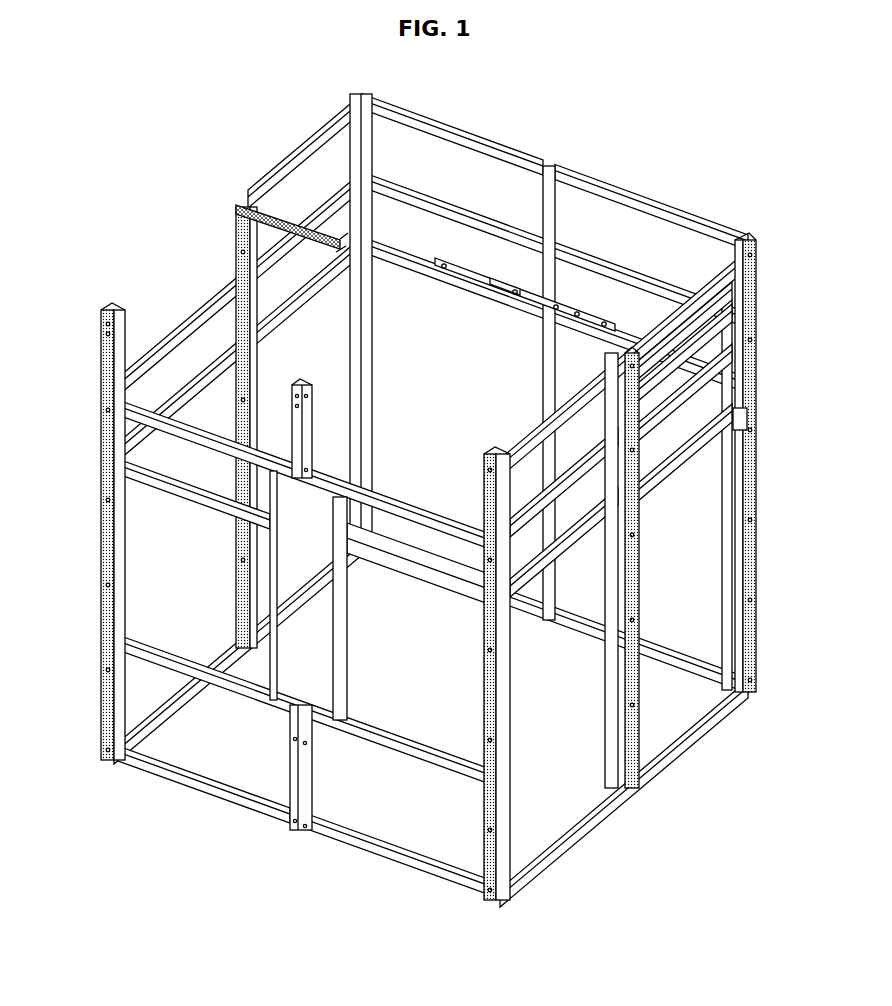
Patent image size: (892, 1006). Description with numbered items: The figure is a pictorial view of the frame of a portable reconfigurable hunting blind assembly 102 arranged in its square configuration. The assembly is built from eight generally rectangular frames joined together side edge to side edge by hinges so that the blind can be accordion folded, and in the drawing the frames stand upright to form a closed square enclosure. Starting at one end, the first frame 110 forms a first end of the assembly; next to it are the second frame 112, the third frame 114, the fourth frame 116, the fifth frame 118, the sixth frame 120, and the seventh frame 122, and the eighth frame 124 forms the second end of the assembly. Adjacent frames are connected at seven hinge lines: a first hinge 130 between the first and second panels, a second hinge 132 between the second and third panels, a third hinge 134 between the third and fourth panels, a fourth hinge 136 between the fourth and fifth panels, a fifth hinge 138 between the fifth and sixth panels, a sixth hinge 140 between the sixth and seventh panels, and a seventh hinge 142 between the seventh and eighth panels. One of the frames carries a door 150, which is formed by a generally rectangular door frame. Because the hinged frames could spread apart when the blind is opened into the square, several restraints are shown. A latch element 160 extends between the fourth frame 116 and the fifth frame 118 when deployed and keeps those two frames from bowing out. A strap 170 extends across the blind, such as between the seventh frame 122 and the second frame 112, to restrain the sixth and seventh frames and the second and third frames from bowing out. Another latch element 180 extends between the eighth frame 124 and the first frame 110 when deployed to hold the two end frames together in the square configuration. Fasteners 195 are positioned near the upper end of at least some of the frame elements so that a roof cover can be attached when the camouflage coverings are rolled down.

The portable reconfigurable hunting blind assembly 102 is at (176, 182).
The first frame 110 is at (458, 128).
The second frame 112 is at (300, 156).
The third frame 114 is at (205, 326).
The fourth frame 116 is at (182, 766).
The fifth frame 118 is at (382, 842).
The sixth frame 120 is at (584, 810).
The seventh frame 122 is at (703, 286).
The eighth frame 124 is at (672, 207).
The first hinge 130 is at (358, 93).
The second hinge 132 is at (236, 266).
The third hinge 134 is at (86, 531).
The fourth hinge 136 is at (306, 384).
The fifth hinge 138 is at (510, 692).
The sixth hinge 140 is at (605, 400).
The seventh hinge 142 is at (757, 310).
The door 150 is at (660, 470).
The latch element 160 is at (296, 694).
The strap 170 is at (275, 210).
The latch element 180 is at (510, 302).
The fasteners 195 is at (101, 340).